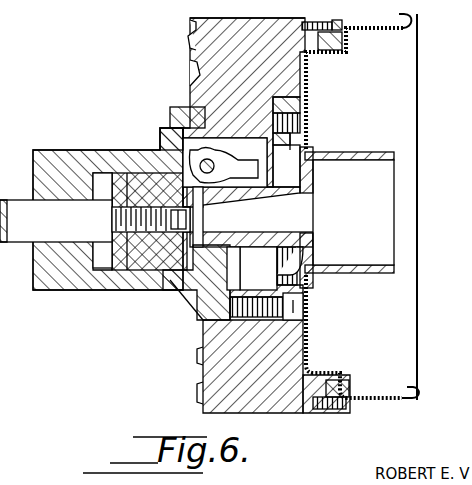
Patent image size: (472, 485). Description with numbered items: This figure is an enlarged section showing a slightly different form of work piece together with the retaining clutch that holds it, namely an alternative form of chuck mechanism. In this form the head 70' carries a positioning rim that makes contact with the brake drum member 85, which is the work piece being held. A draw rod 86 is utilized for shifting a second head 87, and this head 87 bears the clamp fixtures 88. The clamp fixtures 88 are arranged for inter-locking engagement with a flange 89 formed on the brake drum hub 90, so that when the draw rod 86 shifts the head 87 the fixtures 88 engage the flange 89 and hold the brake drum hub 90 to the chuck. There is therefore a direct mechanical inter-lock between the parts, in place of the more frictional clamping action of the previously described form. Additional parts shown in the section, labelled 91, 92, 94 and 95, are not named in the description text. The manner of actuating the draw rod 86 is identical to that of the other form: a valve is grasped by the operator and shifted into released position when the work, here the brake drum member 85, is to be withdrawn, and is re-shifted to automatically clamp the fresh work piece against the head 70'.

The head 70' is at (249, 215).
The brake drum member 85 is at (394, 385).
The draw rod 86 is at (32, 228).
The head 87 is at (122, 158).
The clamp fixtures 88 is at (180, 108).
The flange 89 is at (201, 322).
The brake drum hub 90 is at (167, 272).
The upper wall 91 is at (272, 9).
The bearing 92 is at (289, 204).
The sheet metal shell 94 is at (344, 31).
The housing top 95 is at (209, 9).